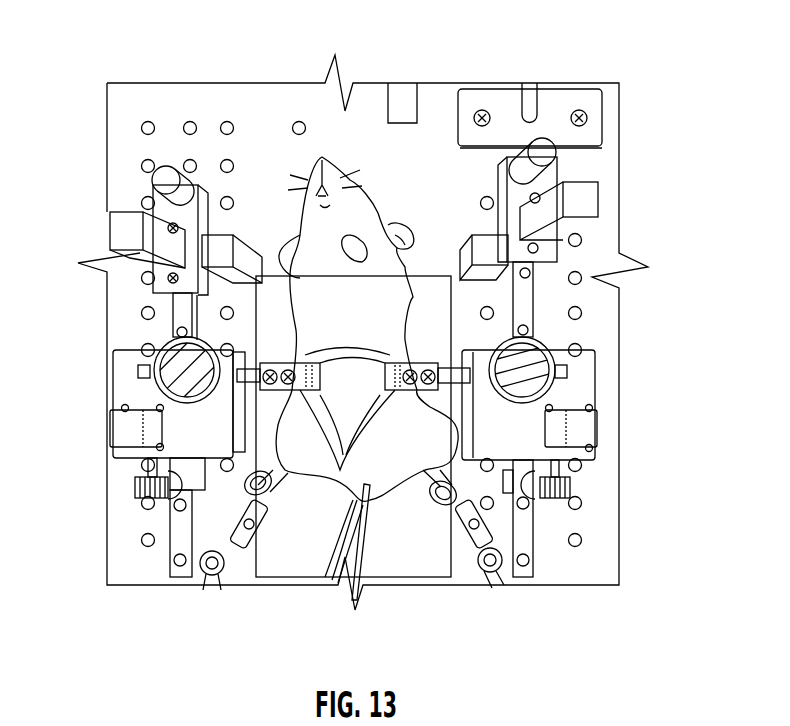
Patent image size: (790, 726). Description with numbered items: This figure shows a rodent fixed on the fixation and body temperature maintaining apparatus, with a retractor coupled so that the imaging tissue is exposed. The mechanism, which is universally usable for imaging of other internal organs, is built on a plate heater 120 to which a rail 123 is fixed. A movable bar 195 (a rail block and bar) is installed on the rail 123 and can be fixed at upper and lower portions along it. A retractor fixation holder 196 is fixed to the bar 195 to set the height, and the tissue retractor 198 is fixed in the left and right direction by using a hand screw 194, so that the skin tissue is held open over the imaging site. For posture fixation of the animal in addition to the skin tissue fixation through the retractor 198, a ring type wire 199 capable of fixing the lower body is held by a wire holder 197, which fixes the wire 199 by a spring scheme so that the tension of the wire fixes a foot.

The plate heater 120 is at (263, 103).
The movable bar 195 is at (513, 175).
The tissue retractor 198 is at (425, 363).
The rail 123 is at (523, 312).
The hand screw 194 is at (540, 375).
The retractor fixation holder 196 is at (562, 470).
The wire holder 197 is at (243, 540).
The ring type wire 199 is at (355, 525).